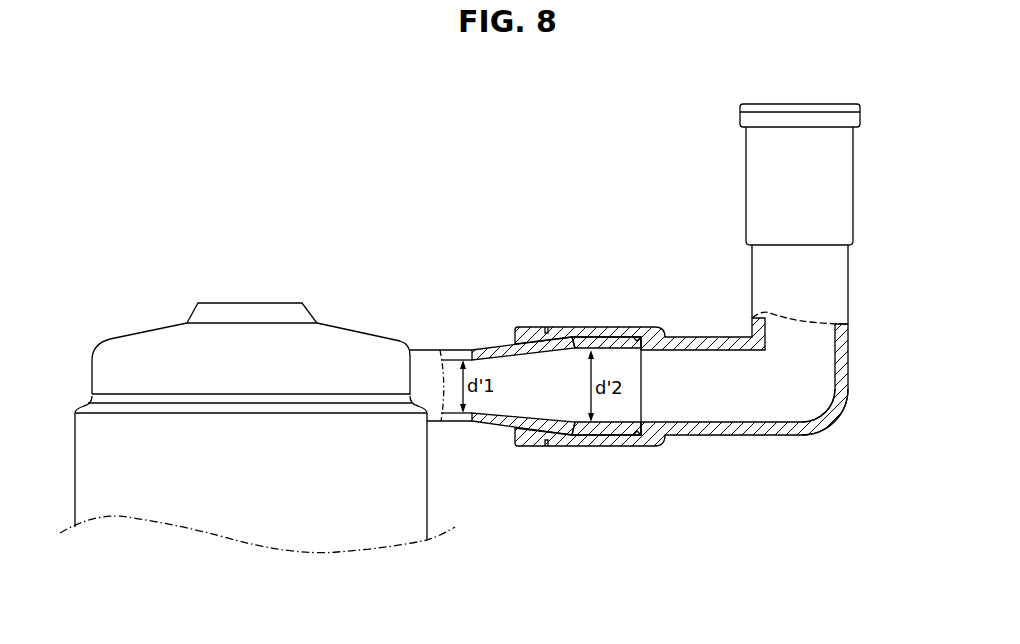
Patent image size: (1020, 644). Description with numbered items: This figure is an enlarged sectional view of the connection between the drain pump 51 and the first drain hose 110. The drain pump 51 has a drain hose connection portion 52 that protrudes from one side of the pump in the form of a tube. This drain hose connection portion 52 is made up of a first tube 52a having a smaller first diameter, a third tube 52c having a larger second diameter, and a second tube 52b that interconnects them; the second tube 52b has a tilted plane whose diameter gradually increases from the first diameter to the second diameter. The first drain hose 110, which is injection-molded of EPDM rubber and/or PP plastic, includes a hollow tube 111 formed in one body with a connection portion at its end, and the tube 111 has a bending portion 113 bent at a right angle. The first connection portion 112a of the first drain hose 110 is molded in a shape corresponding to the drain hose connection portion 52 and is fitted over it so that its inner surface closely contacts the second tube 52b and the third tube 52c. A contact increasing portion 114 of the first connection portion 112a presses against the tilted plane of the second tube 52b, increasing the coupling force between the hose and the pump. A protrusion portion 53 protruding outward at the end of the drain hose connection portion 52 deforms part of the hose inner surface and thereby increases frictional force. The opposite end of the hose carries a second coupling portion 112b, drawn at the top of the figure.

The drain pump 51 is at (152, 335).
The drain hose connection portion 52 is at (549, 393).
The first tube 52a is at (465, 421).
The second tube 52b is at (553, 435).
The third tube 52c is at (622, 435).
The protrusion portion 53 is at (645, 435).
The first drain hose 110 is at (713, 285).
The tube 111 is at (843, 355).
The first connection portion 112a is at (675, 356).
The second coupling portion 112b is at (748, 152).
The bending portion 113 is at (832, 423).
The contact increasing portion 114 is at (528, 326).